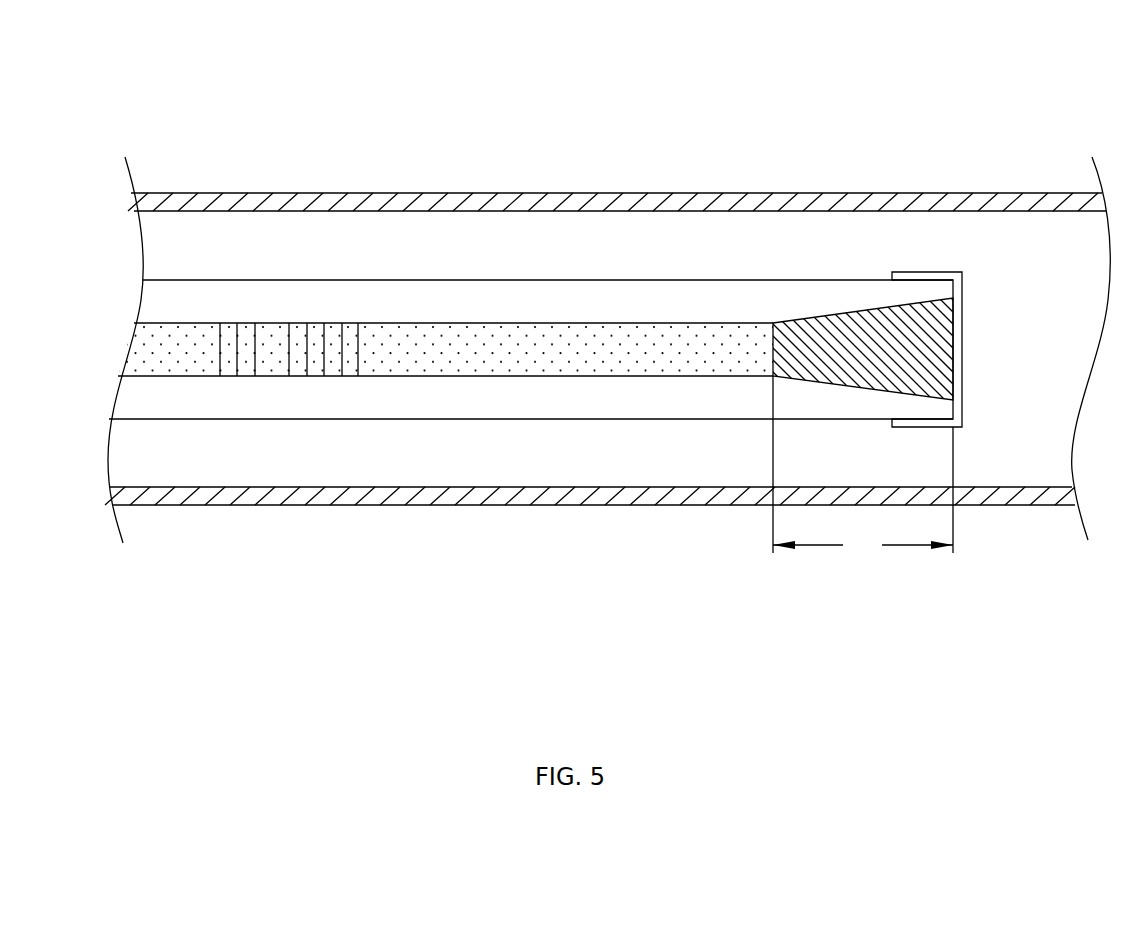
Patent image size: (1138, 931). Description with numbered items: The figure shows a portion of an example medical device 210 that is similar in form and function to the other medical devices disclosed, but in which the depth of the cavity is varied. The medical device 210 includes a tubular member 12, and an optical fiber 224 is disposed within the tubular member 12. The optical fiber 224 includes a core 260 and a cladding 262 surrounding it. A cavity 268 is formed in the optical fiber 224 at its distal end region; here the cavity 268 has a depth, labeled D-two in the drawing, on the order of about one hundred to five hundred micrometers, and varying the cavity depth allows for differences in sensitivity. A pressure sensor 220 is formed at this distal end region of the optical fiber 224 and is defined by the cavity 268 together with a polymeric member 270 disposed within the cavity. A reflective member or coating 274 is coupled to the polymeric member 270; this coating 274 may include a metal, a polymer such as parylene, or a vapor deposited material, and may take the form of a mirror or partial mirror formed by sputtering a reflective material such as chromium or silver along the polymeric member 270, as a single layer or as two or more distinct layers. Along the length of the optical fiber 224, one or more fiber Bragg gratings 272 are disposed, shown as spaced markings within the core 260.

The medical device 210 is at (268, 92).
The tubular member 12 is at (653, 174).
The optical fiber 224 is at (256, 262).
The core 260 is at (434, 380).
The cladding 262 is at (531, 285).
The cavity 268 is at (862, 278).
The pressure sensor 220 is at (872, 288).
The reflective member or coating 274 is at (962, 333).
The polymeric member 270 is at (930, 376).
The fiber Bragg gratings 272 is at (226, 464).